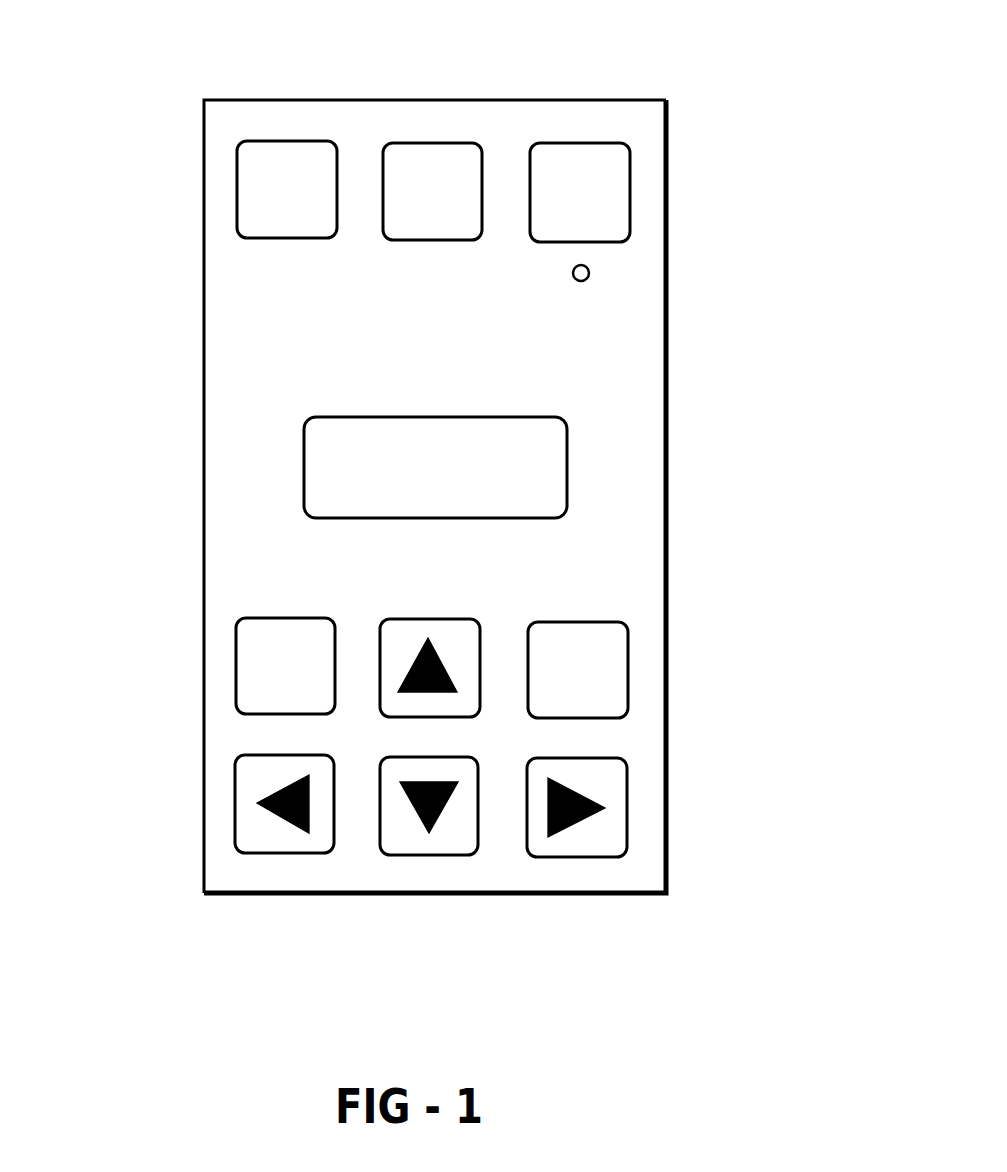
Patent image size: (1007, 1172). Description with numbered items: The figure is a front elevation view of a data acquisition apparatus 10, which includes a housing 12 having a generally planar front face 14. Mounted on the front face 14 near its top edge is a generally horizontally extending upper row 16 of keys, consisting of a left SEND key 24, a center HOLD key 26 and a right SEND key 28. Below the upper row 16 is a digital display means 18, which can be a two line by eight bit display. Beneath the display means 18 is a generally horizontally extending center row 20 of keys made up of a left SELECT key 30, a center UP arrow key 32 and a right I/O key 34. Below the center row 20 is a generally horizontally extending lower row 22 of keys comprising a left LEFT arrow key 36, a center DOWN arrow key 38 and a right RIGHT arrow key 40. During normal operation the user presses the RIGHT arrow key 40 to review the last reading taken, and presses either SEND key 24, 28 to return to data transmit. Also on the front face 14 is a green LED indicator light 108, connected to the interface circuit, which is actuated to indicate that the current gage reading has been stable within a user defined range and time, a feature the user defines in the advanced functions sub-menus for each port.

The data acquisition apparatus 10 is at (786, 96).
The housing 12 is at (667, 275).
The front face 14 is at (620, 478).
The upper row of keys 16 is at (214, 190).
The digital display means 18 is at (304, 476).
The center row of keys 20 is at (212, 665).
The lower row of keys 22 is at (208, 801).
The left SEND key 24 is at (288, 141).
The HOLD key 26 is at (447, 143).
The right SEND key 28 is at (630, 190).
The SELECT key 30 is at (288, 618).
The UP arrow key 32 is at (446, 619).
The I/O key 34 is at (628, 675).
The LEFT arrow key 36 is at (278, 853).
The DOWN arrow key 38 is at (428, 855).
The RIGHT arrow key 40 is at (627, 826).
The LED indicator light 108 is at (581, 281).